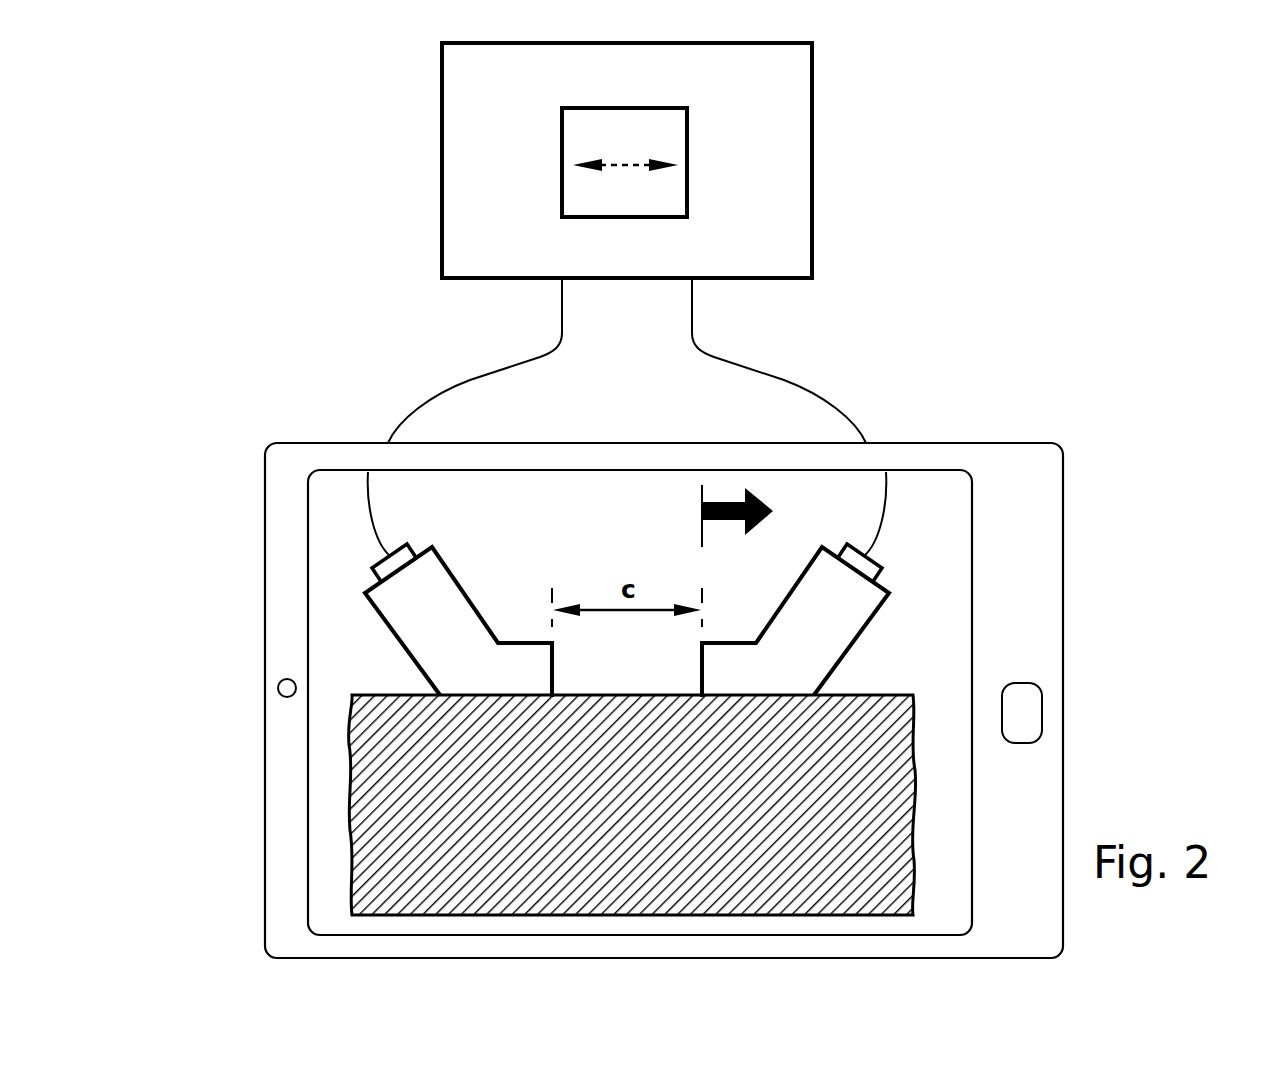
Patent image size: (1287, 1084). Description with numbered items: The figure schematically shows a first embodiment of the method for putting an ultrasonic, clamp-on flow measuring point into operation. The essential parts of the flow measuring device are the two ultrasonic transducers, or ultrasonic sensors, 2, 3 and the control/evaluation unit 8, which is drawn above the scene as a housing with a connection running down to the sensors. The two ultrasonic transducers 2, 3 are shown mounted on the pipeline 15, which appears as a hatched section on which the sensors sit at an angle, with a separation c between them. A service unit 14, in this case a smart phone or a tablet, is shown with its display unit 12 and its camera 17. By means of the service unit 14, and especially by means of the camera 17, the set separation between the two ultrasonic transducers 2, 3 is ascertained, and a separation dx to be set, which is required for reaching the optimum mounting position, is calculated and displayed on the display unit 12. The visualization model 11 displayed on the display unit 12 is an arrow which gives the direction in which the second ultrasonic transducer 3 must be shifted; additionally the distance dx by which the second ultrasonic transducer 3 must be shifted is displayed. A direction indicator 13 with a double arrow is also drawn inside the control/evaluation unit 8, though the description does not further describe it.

The first ultrasonic transducer 2 is at (418, 608).
The second ultrasonic transducer 3 is at (850, 608).
The control/evaluation unit 8 is at (757, 145).
The visualization model 11 is at (763, 513).
The display unit 12 is at (322, 880).
The direction indicator 13 is at (598, 131).
The service unit 14 is at (1030, 638).
The pipeline 15 is at (883, 803).
The camera 17 is at (278, 688).